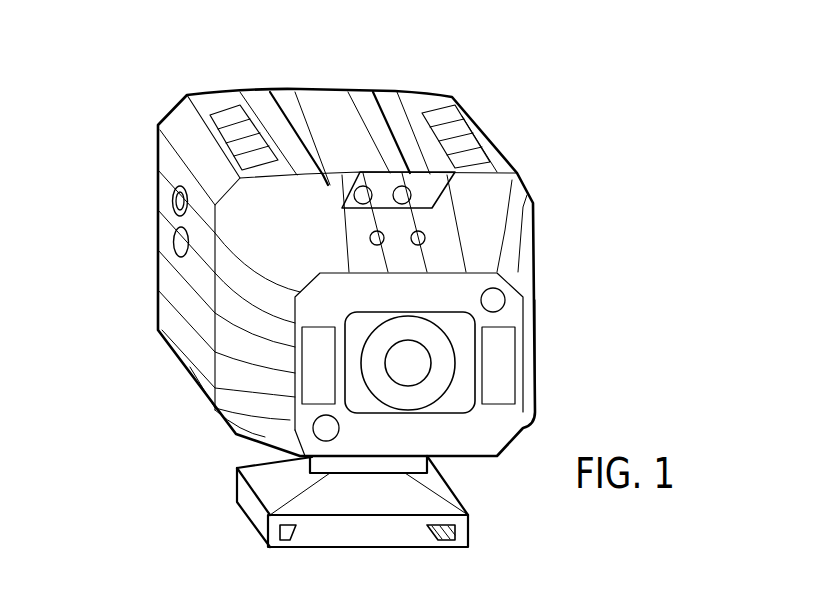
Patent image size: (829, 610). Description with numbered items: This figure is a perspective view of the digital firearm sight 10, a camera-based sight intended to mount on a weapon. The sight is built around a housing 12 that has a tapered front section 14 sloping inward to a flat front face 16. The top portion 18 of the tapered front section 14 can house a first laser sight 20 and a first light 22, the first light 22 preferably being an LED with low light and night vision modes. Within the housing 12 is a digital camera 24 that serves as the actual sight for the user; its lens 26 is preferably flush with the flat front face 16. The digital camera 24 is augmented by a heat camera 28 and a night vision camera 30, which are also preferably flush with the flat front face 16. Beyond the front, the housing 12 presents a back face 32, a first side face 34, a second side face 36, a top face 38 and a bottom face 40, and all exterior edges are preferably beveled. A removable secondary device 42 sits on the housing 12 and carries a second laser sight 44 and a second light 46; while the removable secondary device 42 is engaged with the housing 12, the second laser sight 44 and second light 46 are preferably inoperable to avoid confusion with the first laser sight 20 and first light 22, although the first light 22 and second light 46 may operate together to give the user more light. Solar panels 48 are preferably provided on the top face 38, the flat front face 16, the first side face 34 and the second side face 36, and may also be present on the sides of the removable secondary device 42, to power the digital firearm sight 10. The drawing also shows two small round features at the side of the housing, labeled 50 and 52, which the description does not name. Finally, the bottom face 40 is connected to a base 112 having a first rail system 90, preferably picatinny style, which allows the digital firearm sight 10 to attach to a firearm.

The digital firearm sight 10 is at (635, 118).
The housing 12 is at (162, 122).
The tapered front section 14 is at (518, 232).
The flat front face 16 is at (510, 318).
The top portion 18 is at (273, 253).
The first laser sight 20 is at (370, 240).
The first light 22 is at (425, 239).
The digital camera 24 is at (362, 352).
The lens 26 is at (431, 372).
The heat camera 28 is at (317, 434).
The night vision camera 30 is at (505, 298).
The back face 32 is at (153, 197).
The first side face 34 is at (165, 269).
The second side face 36 is at (538, 373).
The top face 38 is at (422, 105).
The bottom face 40 is at (488, 463).
The removable secondary device 42 is at (347, 118).
The second laser sight 44 is at (357, 188).
The second light 46 is at (411, 194).
The solar panels 48 is at (465, 138).
The power connector 50 is at (176, 197).
The data port 52 is at (175, 241).
The first rail system 90 is at (435, 537).
The base 112 is at (257, 524).